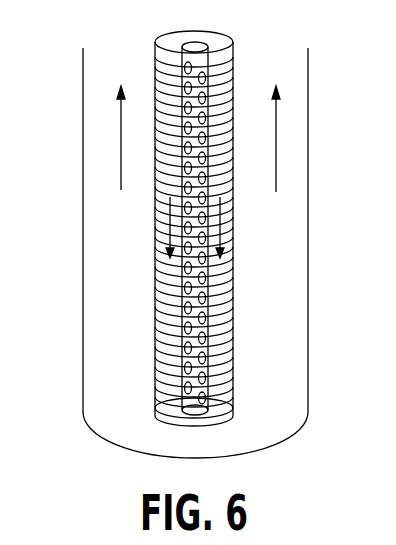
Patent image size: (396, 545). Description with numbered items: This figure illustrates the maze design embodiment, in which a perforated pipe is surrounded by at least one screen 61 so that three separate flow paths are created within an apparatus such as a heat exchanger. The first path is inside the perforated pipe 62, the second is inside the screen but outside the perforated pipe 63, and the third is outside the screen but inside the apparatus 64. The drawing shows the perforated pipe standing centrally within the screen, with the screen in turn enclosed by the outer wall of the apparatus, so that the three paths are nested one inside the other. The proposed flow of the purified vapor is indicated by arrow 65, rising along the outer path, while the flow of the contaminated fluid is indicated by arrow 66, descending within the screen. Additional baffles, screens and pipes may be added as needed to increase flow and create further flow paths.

The screen 61 is at (233, 306).
The flow path inside the perforated pipe 62 is at (198, 46).
The flow path inside the screen but outside the perforated pipe 63 is at (232, 80).
The flow path outside the screen but inside the apparatus 64 is at (98, 343).
The arrow for purified vapor 65 is at (118, 138).
The arrow for contaminated fluid 66 is at (157, 233).